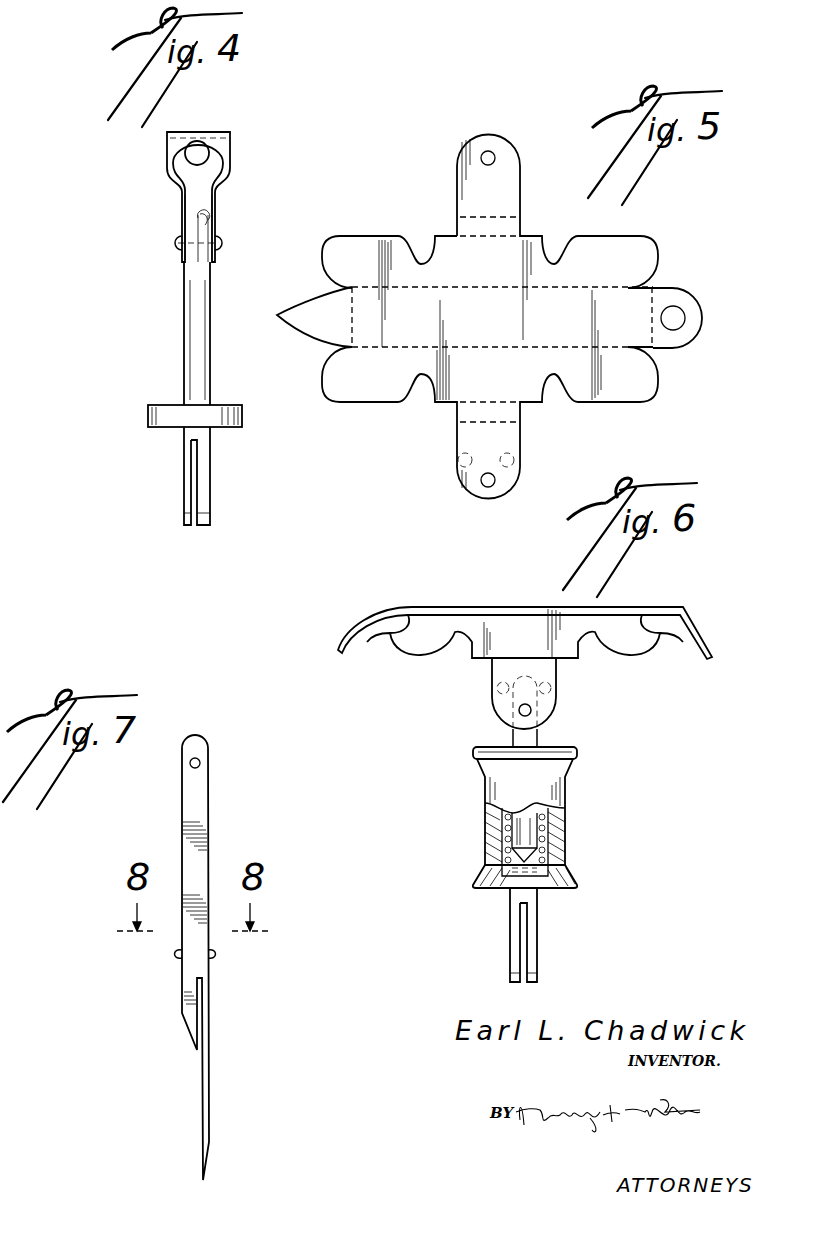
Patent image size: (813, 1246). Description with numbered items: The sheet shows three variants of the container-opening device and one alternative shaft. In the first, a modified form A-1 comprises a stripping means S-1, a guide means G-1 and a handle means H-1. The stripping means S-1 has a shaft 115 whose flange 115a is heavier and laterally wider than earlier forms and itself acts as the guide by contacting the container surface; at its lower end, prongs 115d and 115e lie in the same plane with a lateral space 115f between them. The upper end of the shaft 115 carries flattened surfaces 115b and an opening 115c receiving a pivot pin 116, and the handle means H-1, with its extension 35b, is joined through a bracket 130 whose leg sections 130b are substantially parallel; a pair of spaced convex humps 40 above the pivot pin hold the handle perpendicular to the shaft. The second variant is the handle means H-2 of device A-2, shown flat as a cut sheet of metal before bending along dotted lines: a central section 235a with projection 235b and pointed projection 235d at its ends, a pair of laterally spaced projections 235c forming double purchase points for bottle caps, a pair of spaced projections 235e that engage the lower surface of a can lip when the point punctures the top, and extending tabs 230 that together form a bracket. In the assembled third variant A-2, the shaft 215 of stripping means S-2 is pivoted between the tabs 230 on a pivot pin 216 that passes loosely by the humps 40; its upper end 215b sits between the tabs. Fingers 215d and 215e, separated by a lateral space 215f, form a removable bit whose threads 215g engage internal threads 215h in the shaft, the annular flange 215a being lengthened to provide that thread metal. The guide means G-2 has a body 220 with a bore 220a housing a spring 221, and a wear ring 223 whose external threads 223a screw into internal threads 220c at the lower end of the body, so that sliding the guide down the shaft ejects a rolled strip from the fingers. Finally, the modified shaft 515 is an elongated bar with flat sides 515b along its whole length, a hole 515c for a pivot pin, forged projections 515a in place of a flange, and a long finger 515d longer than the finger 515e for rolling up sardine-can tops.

In FIG. 4, the handle means H-1 is at (160, 148).
In FIG. 4, the modified form of the device A-1 is at (238, 150).
In FIG. 4, the extension 35b is at (176, 163).
In FIG. 4, the bracket 130 is at (232, 178).
In FIG. 4, the leg sections 130b is at (216, 200).
In FIG. 4, the convex humps 40 is at (205, 220).
In FIG. 5, the convex humps 40 is at (458, 458).
In FIG. 6, the convex humps 40 is at (497, 691).
In FIG. 4, the flattened surfaces 115b is at (185, 228).
In FIG. 4, the opening 115c is at (208, 235).
In FIG. 4, the pivot pin 116 is at (176, 243).
In FIG. 4, the shaft 115 is at (188, 285).
In FIG. 4, the stripping means S-1 is at (176, 341).
In FIG. 4, the guide means G-1 is at (142, 415).
In FIG. 4, the flange 115a is at (170, 427).
In FIG. 4, the finger or prong 115e is at (182, 482).
In FIG. 4, the finger or prong 115d is at (203, 478).
In FIG. 4, the lateral space 115f is at (193, 527).
In FIG. 5, the extending tabs 230 is at (517, 180).
In FIG. 6, the extending tabs 230 is at (498, 673).
In FIG. 5, the central section 235a is at (466, 335).
In FIG. 5, the projection 235b is at (680, 295).
In FIG. 6, the projection 235b is at (700, 632).
In FIG. 5, the laterally spaced projections 235c is at (655, 258).
In FIG. 6, the laterally spaced projections 235c is at (665, 640).
In FIG. 5, the pointed projection 235d is at (325, 298).
In FIG. 6, the pointed projection 235d is at (350, 628).
In FIG. 5, the spaced projections 235e is at (323, 250).
In FIG. 6, the spaced projections 235e is at (388, 635).
In FIG. 5, the handle means H-2 is at (612, 392).
In FIG. 6, the handle means H-2 is at (633, 655).
In FIG. 6, the modified form of the device A-2 is at (487, 600).
In FIG. 6, the pivot pin 216 is at (518, 711).
In FIG. 6, the stem upper end 215b is at (537, 731).
In FIG. 6, the shaft 215 is at (538, 748).
In FIG. 6, the guide means G-2 is at (568, 786).
In FIG. 6, the body 220 is at (487, 806).
In FIG. 6, the spring 221 is at (502, 826).
In FIG. 6, the internal threads 220c is at (490, 843).
In FIG. 6, the annular flange 215a is at (510, 860).
In FIG. 6, the internal threads 215h is at (500, 873).
In FIG. 6, the bore 220a is at (565, 826).
In FIG. 6, the external threads 223a is at (560, 842).
In FIG. 6, the threads 215g is at (560, 862).
In FIG. 6, the wear ring 223 is at (575, 880).
In FIG. 6, the stripping means S-2 is at (538, 920).
In FIG. 6, the finger 215d is at (538, 942).
In FIG. 6, the finger 215e is at (509, 955).
In FIG. 6, the lateral space 215f is at (525, 985).
In FIG. 7, the modified shaft 515 is at (200, 807).
In FIG. 7, the hole 515c is at (201, 764).
In FIG. 7, the flat sides 515b is at (200, 858).
In FIG. 7, the projections 515a is at (176, 955).
In FIG. 7, the finger 515e is at (182, 1020).
In FIG. 7, the long finger 515d is at (205, 1053).